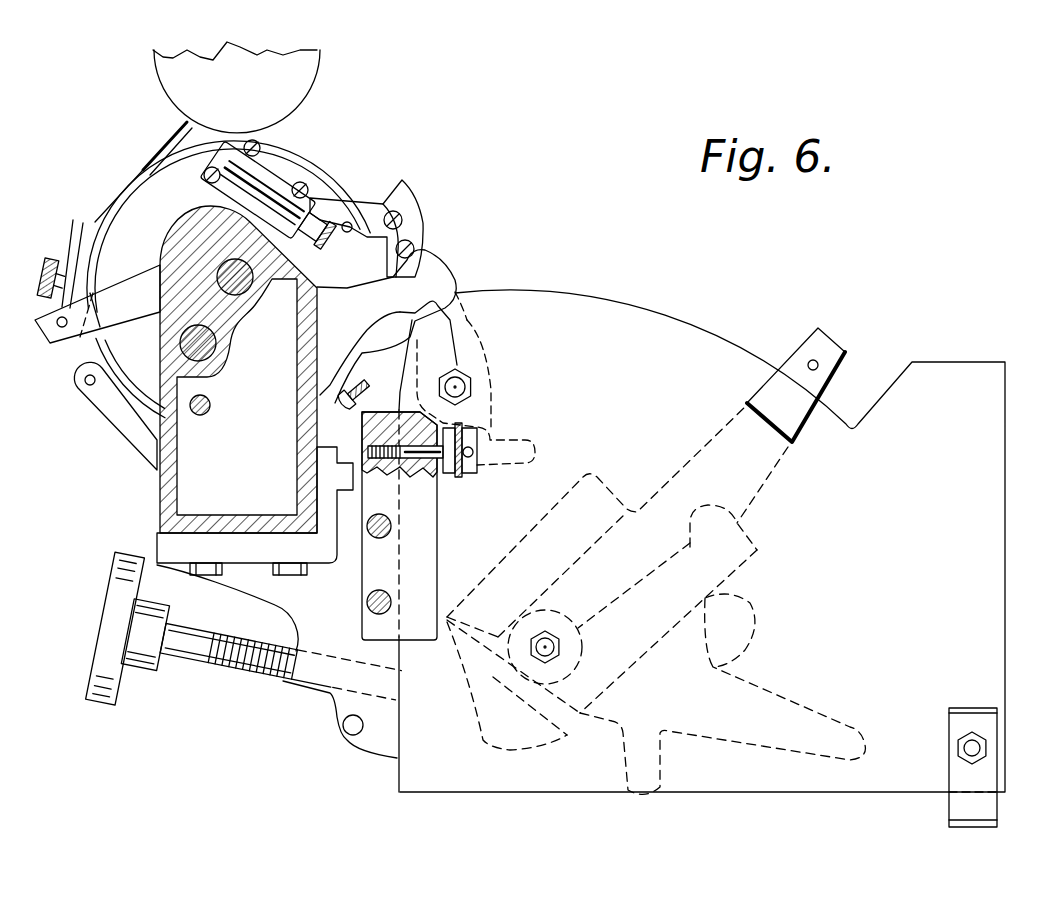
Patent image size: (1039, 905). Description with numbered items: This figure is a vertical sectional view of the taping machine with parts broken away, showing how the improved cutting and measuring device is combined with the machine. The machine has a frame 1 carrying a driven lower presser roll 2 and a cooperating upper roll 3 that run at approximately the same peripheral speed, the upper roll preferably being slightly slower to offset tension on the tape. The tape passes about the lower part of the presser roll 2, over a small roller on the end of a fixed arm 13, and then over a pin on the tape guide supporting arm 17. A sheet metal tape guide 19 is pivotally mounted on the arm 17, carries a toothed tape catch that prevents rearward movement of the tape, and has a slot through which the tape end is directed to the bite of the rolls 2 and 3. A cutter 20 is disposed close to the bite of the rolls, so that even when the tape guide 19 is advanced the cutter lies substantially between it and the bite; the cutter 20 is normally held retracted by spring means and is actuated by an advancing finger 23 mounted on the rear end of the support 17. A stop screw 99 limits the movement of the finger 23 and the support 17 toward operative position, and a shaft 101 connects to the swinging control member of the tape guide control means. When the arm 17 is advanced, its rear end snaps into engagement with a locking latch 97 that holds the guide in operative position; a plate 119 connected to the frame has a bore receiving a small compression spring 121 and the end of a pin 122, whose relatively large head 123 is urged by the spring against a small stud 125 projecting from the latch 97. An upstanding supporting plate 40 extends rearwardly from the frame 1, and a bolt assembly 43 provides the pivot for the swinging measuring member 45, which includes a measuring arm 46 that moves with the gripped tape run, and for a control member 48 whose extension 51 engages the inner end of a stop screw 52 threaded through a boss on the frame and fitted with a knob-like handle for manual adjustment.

The frame 1 is at (158, 487).
The lower presser roll 2 is at (320, 157).
The upper roll 3 is at (306, 66).
The fixed arm 13 is at (114, 412).
The tape guide supporting arm 17 is at (97, 304).
The sheet metal tape guide 19 is at (80, 228).
The cutter 20 is at (185, 131).
The advancing finger 23 is at (360, 207).
The supporting plate 40 is at (688, 330).
The bolt assembly 43 is at (550, 643).
The swinging measuring member 45 is at (710, 588).
The measuring arm 46 is at (758, 478).
The control member 48 is at (718, 666).
The extension 51 is at (507, 753).
The stop screw 52 is at (230, 667).
The locking latch 97 is at (445, 318).
The stop screw 99 is at (356, 392).
The shaft 101 is at (211, 405).
The plate 119 is at (425, 523).
The compression spring 121 is at (395, 457).
The pin 122 is at (437, 460).
The head 123 is at (458, 428).
The stud 125 is at (470, 458).